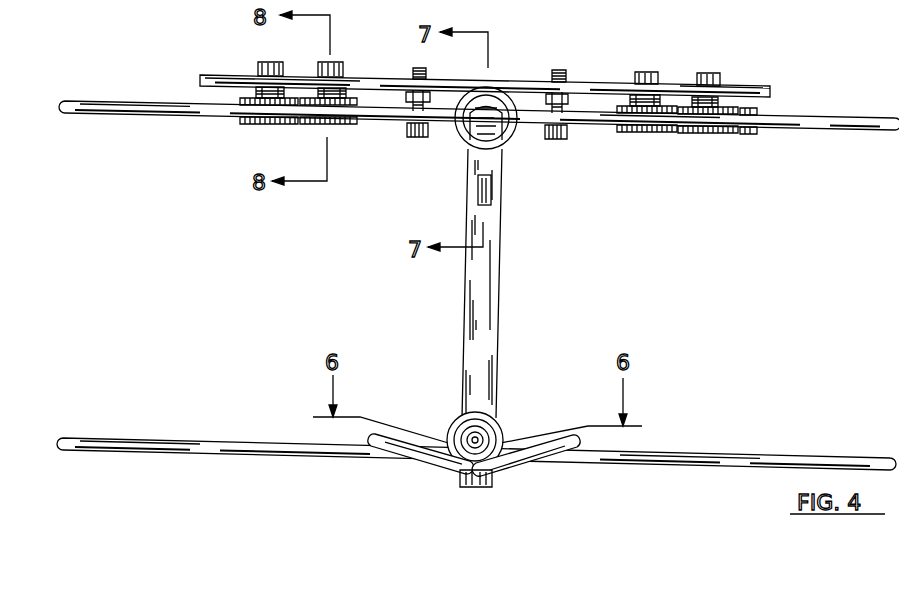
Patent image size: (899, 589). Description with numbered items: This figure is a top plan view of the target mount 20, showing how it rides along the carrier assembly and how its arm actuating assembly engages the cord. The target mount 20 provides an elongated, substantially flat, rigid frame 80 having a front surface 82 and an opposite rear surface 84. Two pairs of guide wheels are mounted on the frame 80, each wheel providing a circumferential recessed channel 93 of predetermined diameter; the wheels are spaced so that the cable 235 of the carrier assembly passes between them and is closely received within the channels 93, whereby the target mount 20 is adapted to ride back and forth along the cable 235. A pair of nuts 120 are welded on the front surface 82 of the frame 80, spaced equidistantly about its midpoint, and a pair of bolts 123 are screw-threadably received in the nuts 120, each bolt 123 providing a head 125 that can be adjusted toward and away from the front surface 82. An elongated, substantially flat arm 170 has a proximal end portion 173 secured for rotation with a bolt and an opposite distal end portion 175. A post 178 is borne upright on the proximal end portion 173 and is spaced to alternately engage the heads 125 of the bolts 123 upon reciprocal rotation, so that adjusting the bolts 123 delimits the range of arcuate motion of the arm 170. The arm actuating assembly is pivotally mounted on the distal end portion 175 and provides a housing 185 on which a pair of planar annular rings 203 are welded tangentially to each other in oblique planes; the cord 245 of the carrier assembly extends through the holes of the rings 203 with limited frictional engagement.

The target mount 20 is at (361, 74).
The frame 80 is at (505, 80).
The front surface 82 is at (612, 100).
The rear surface 84 is at (680, 86).
The circumferential recessed channel 93 is at (724, 134).
The nuts 120 is at (430, 97).
The bolts 123 is at (413, 105).
The head 125 is at (415, 138).
The arm 170 is at (490, 290).
The proximal end portion 173 is at (488, 160).
The post 178 is at (488, 192).
The housing 185 is at (492, 428).
The distal end portion 175 is at (463, 478).
The annular rings 203 is at (400, 446).
The cable 235 is at (815, 121).
The cord 245 is at (700, 455).